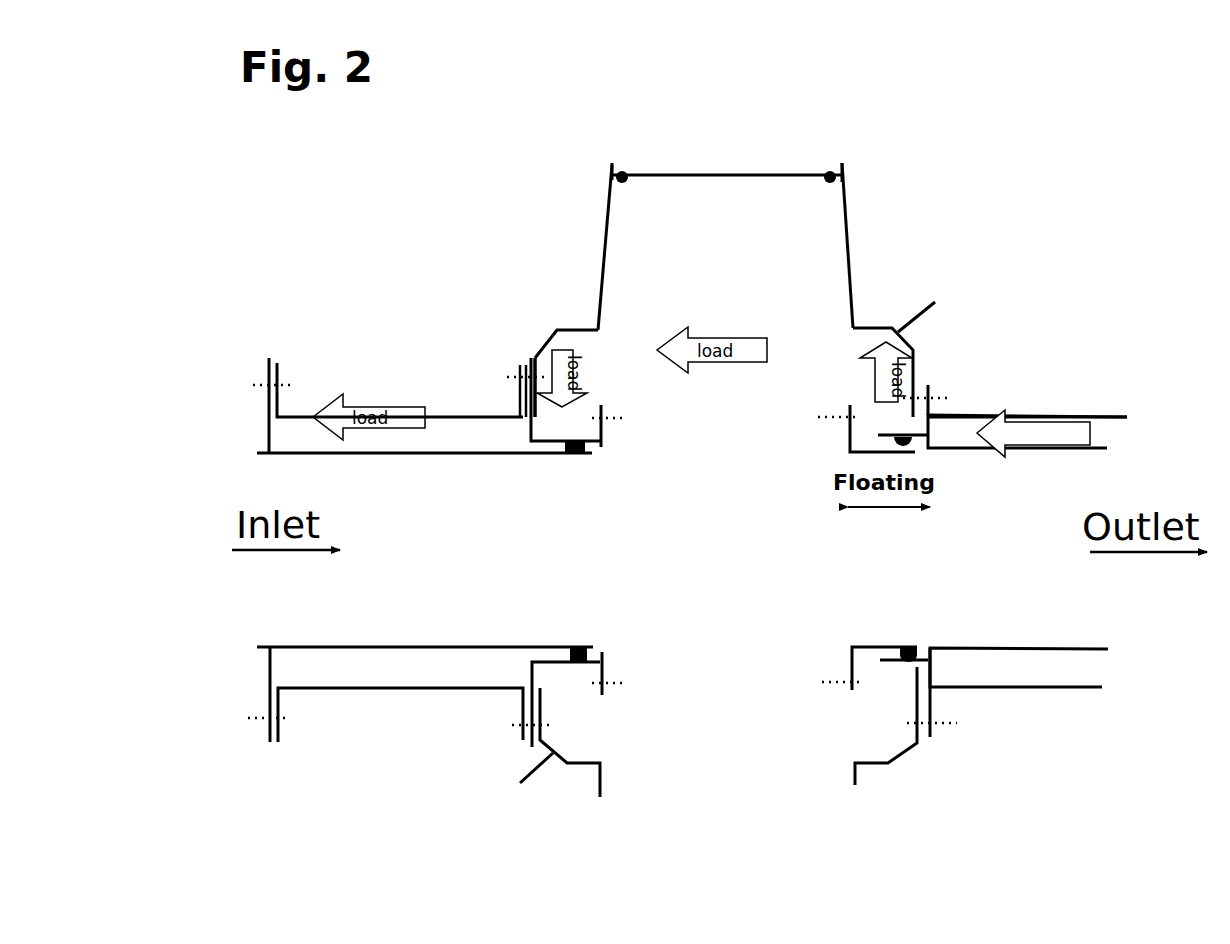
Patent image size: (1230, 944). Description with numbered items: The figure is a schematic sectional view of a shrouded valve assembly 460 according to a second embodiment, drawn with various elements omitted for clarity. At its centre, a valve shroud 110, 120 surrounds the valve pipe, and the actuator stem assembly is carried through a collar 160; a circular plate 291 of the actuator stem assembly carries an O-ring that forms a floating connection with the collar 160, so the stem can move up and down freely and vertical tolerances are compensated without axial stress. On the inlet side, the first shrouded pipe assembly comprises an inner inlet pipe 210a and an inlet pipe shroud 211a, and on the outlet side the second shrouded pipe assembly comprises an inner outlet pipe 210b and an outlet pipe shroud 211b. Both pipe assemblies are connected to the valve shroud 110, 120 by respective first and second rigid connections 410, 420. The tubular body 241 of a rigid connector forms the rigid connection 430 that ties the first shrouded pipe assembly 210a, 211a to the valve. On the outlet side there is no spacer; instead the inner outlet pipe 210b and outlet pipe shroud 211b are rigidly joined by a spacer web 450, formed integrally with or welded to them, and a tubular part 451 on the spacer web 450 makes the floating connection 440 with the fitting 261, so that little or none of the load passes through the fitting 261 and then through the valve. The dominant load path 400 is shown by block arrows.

The valve shroud member 110 is at (550, 340).
The valve shroud member 120 is at (920, 357).
The collar 160 is at (600, 285).
The circular plate 291 is at (705, 173).
The inner inlet pipe 210a is at (403, 647).
The inner outlet pipe 210b is at (973, 452).
The inlet pipe shroud 211a is at (348, 692).
The outlet pipe shroud 211b is at (1113, 415).
The tubular body 241 is at (543, 446).
The tubular body 261 is at (883, 647).
The load 400 is at (1047, 423).
The first rigid connection 410 is at (498, 389).
The second rigid connection 420 is at (959, 387).
The rigid connection 430 is at (617, 431).
The floating connection 440 is at (919, 628).
The spacer web 450 is at (935, 668).
The tubular part 451 is at (897, 662).
The shrouded valve assembly 460 is at (437, 322).